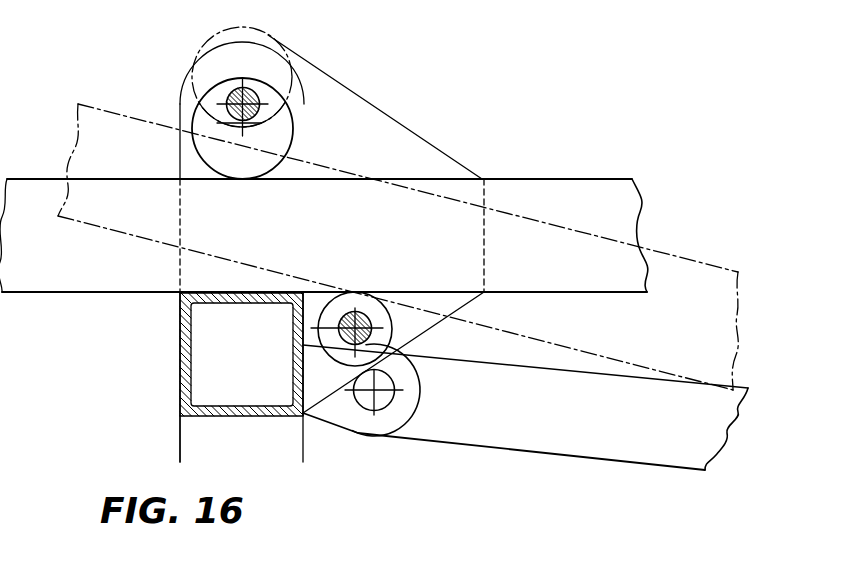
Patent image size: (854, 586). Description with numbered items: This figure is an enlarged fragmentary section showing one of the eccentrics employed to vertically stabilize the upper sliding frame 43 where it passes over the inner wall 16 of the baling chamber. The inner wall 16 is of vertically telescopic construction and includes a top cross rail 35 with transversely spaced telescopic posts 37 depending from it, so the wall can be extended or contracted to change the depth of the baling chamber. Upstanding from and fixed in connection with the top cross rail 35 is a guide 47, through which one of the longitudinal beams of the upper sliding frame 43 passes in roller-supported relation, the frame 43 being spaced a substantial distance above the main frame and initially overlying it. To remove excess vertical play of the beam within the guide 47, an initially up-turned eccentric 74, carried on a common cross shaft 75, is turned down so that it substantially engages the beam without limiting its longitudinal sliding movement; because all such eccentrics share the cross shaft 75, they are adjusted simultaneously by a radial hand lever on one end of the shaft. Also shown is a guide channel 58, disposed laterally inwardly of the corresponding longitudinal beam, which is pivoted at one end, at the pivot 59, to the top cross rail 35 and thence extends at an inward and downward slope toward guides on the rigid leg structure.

The inner wall 16 is at (275, 434).
The top cross rail 35 is at (185, 347).
The telescopic post 37 is at (180, 442).
The upper sliding frame 43 is at (538, 188).
The guide 47 is at (385, 119).
The guide channel 58 is at (661, 257).
The pivot 59 is at (369, 409).
The eccentric 74 is at (291, 121).
The cross shaft 75 is at (245, 43).